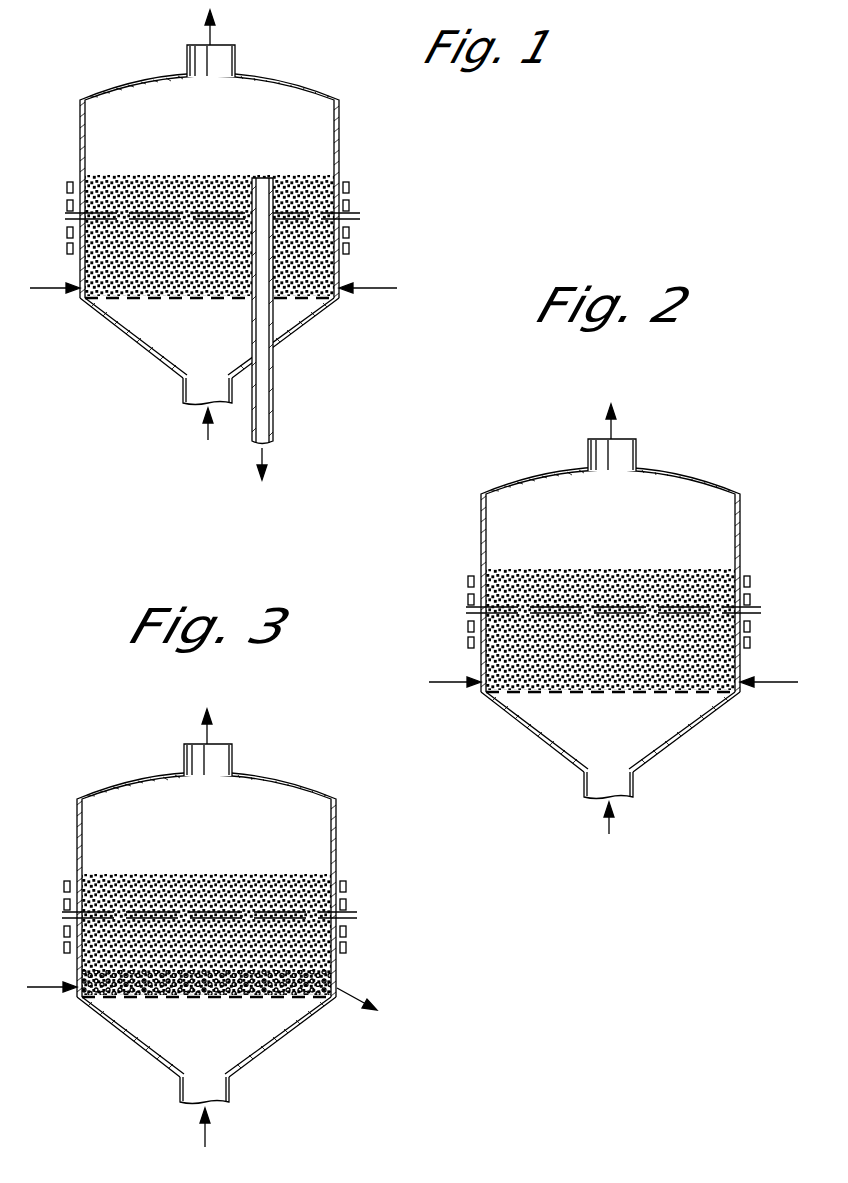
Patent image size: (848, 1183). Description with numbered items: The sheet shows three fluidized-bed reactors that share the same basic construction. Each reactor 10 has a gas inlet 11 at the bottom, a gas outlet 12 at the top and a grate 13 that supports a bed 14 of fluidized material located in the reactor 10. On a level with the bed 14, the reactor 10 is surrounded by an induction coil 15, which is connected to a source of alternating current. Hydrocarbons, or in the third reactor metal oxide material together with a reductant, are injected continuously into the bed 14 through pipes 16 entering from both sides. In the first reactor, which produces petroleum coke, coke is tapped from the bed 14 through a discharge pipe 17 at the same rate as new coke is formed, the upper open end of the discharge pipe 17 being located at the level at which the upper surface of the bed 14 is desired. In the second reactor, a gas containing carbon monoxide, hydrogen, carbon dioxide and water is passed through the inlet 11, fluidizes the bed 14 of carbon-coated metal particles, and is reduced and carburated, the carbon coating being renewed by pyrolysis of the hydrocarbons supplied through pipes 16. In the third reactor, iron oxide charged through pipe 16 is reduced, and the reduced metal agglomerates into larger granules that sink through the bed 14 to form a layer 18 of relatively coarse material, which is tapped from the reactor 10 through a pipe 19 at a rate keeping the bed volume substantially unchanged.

In FIG. 1, the reactor 10 is at (81, 142).
In FIG. 2, the reactor 10 is at (592, 579).
In FIG. 3, the reactor 10 is at (185, 884).
In FIG. 1, the gas inlet 11 is at (183, 388).
In FIG. 2, the gas inlet 11 is at (590, 803).
In FIG. 3, the gas inlet 11 is at (187, 1112).
In FIG. 1, the gas outlet 12 is at (187, 56).
In FIG. 2, the gas outlet 12 is at (592, 437).
In FIG. 3, the gas outlet 12 is at (187, 742).
In FIG. 1, the grate 13 is at (120, 298).
In FIG. 2, the grate 13 is at (610, 731).
In FIG. 3, the grate 13 is at (206, 1034).
In FIG. 1, the bed 14 is at (327, 248).
In FIG. 2, the bed 14 is at (762, 612).
In FIG. 3, the bed 14 is at (360, 917).
In FIG. 1, the induction coil 15 is at (67, 231).
In FIG. 2, the induction coil 15 is at (593, 612).
In FIG. 3, the induction coil 15 is at (192, 917).
In FIG. 1, the pipes 16 is at (57, 290).
In FIG. 2, the pipes 16 is at (613, 695).
In FIG. 3, the pipes 16 is at (52, 1001).
In FIG. 1, the discharge pipe 17 is at (273, 327).
In FIG. 3, the layer 18 is at (210, 1008).
In FIG. 3, the pipe 19 is at (357, 988).